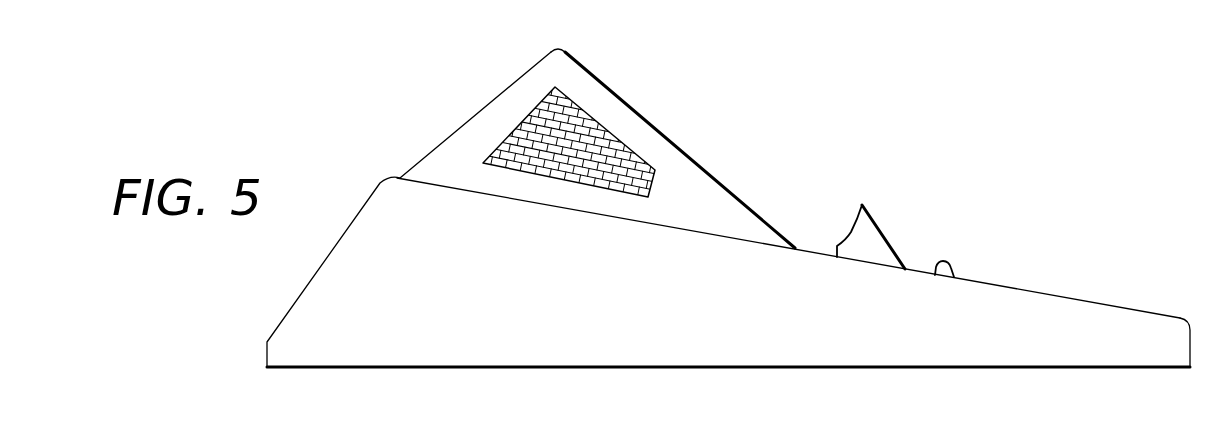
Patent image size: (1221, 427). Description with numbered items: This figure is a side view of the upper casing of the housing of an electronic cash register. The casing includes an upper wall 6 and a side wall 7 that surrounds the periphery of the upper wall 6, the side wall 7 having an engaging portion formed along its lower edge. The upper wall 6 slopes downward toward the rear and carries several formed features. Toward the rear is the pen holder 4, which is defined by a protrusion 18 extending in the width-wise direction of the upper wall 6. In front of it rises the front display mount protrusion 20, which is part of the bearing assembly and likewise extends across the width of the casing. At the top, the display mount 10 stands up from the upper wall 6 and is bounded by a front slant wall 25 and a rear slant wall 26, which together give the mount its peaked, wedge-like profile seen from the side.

The display mount 10 is at (597, 131).
The rear slant wall 26 is at (468, 118).
The front slant wall 25 is at (697, 158).
The front display mount protrusion 20 is at (850, 233).
The protrusion 18 is at (940, 260).
The upper wall 6 is at (1080, 300).
The side wall 7 is at (720, 363).
The pen holder 4 is at (923, 275).